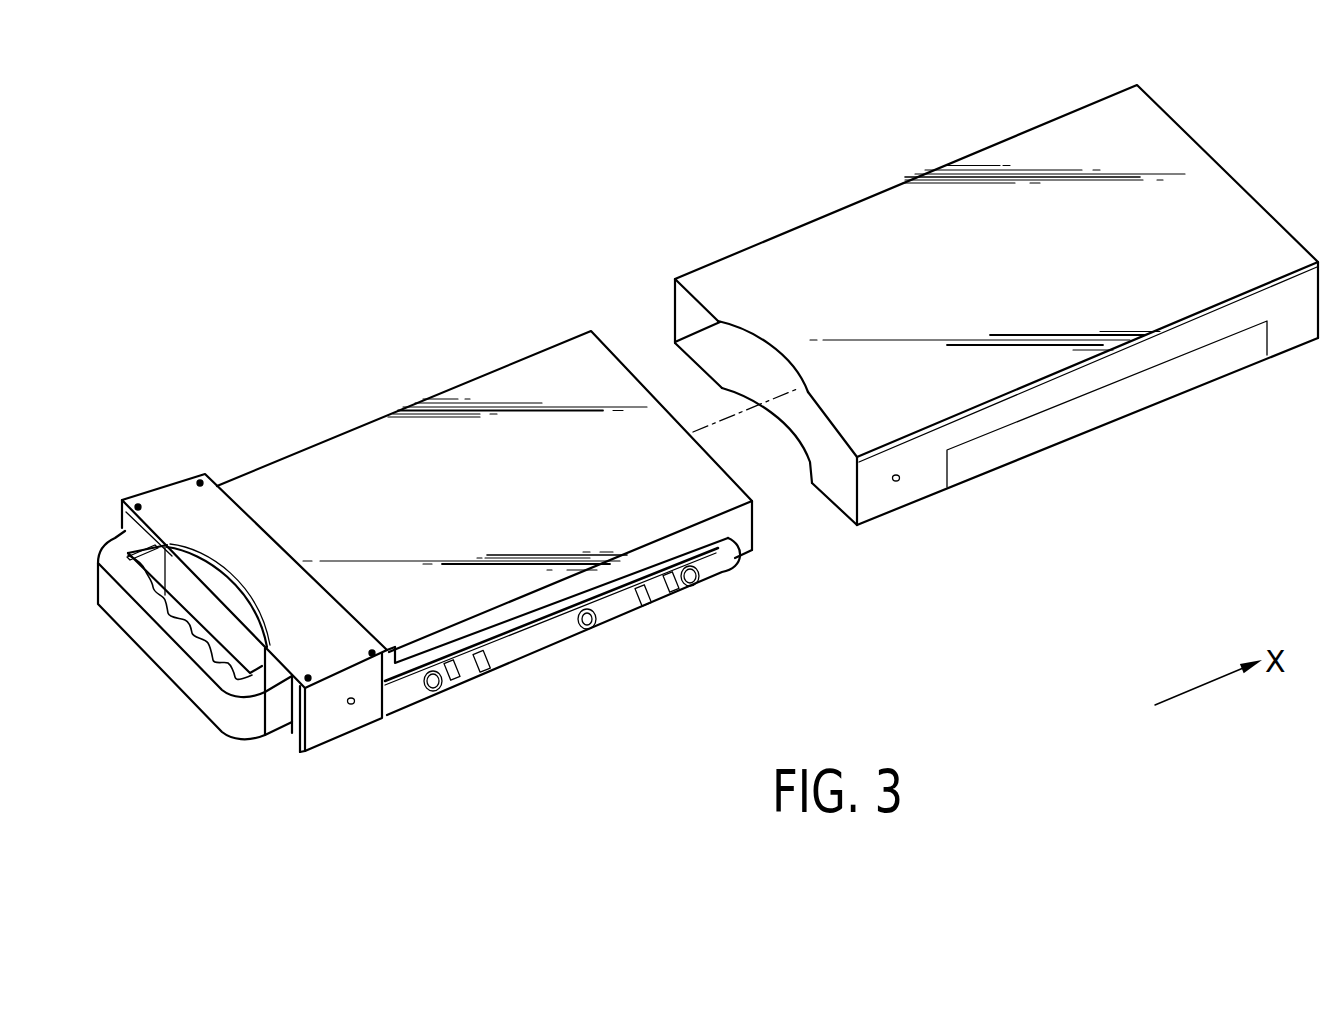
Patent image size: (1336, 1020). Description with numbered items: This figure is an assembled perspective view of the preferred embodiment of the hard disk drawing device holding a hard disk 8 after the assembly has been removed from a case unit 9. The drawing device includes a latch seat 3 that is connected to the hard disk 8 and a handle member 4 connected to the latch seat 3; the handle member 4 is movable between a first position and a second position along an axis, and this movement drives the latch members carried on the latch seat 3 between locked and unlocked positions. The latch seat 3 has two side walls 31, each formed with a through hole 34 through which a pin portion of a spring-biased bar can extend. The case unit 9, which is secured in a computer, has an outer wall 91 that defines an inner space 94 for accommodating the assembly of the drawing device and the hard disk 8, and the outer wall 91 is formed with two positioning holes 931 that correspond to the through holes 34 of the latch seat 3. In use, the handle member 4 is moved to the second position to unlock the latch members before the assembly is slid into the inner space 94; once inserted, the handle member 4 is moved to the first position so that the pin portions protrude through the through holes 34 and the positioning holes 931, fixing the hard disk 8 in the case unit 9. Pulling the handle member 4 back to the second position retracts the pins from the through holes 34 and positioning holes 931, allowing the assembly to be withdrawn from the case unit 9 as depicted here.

The latch seat 3 is at (268, 675).
The side wall 31 is at (317, 758).
The through hole 34 is at (353, 703).
The handle member 4 is at (150, 680).
The hard disk 8 is at (474, 370).
The case unit 9 is at (923, 172).
The outer wall 91 is at (1027, 142).
The positioning hole 931 is at (900, 482).
The inner space 94 is at (796, 403).